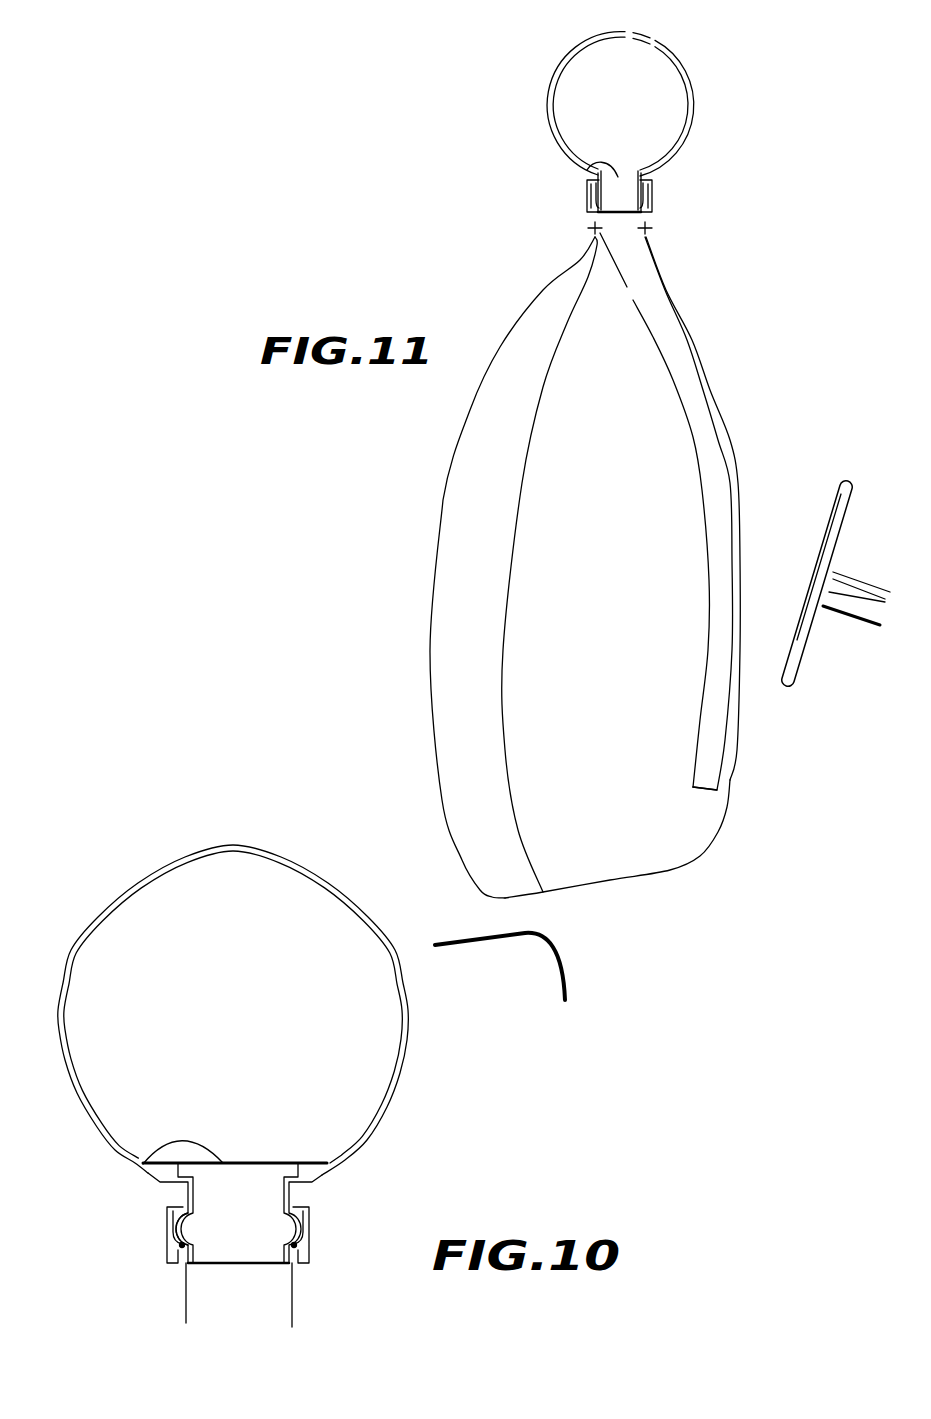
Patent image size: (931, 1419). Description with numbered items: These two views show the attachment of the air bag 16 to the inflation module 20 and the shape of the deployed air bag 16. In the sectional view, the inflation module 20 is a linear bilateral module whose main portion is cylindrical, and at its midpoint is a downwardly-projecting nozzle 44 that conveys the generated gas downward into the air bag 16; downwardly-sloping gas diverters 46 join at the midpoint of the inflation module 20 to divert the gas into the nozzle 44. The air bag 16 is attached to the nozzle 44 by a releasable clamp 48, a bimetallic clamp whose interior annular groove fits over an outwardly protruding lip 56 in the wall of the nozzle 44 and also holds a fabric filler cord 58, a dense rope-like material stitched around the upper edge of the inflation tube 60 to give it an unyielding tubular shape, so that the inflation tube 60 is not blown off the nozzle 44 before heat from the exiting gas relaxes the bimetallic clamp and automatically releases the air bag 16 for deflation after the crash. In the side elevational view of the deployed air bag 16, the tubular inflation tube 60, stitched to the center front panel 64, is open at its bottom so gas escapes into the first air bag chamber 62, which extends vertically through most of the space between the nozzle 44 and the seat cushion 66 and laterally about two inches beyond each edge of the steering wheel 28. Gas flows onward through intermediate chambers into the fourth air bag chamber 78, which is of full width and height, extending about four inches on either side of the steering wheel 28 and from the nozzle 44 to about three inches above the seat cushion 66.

In FIG. 11, the air bag 16 is at (538, 530).
In FIG. 10, the air bag 16 is at (188, 1305).
In FIG. 11, the inflation module 20 is at (700, 95).
In FIG. 10, the inflation module 20 is at (362, 1117).
In FIG. 11, the steering wheel 28 is at (840, 532).
In FIG. 11, the nozzle 44 is at (585, 168).
In FIG. 10, the nozzle 44 is at (293, 1198).
In FIG. 11, the gas diverters 46 is at (602, 169).
In FIG. 10, the gas diverters 46 is at (143, 1153).
In FIG. 11, the releasable clamp 48 is at (655, 195).
In FIG. 10, the releasable clamp 48 is at (313, 1236).
In FIG. 10, the lip 56 is at (188, 1228).
In FIG. 10, the fabric filler cord 58 is at (180, 1245).
In FIG. 11, the inflation tube 60 is at (678, 350).
In FIG. 11, the first air bag chamber 62 is at (673, 745).
In FIG. 11, the center front panel 64 is at (745, 537).
In FIG. 11, the seat cushion 66 is at (500, 950).
In FIG. 11, the fourth air bag chamber 78 is at (442, 655).